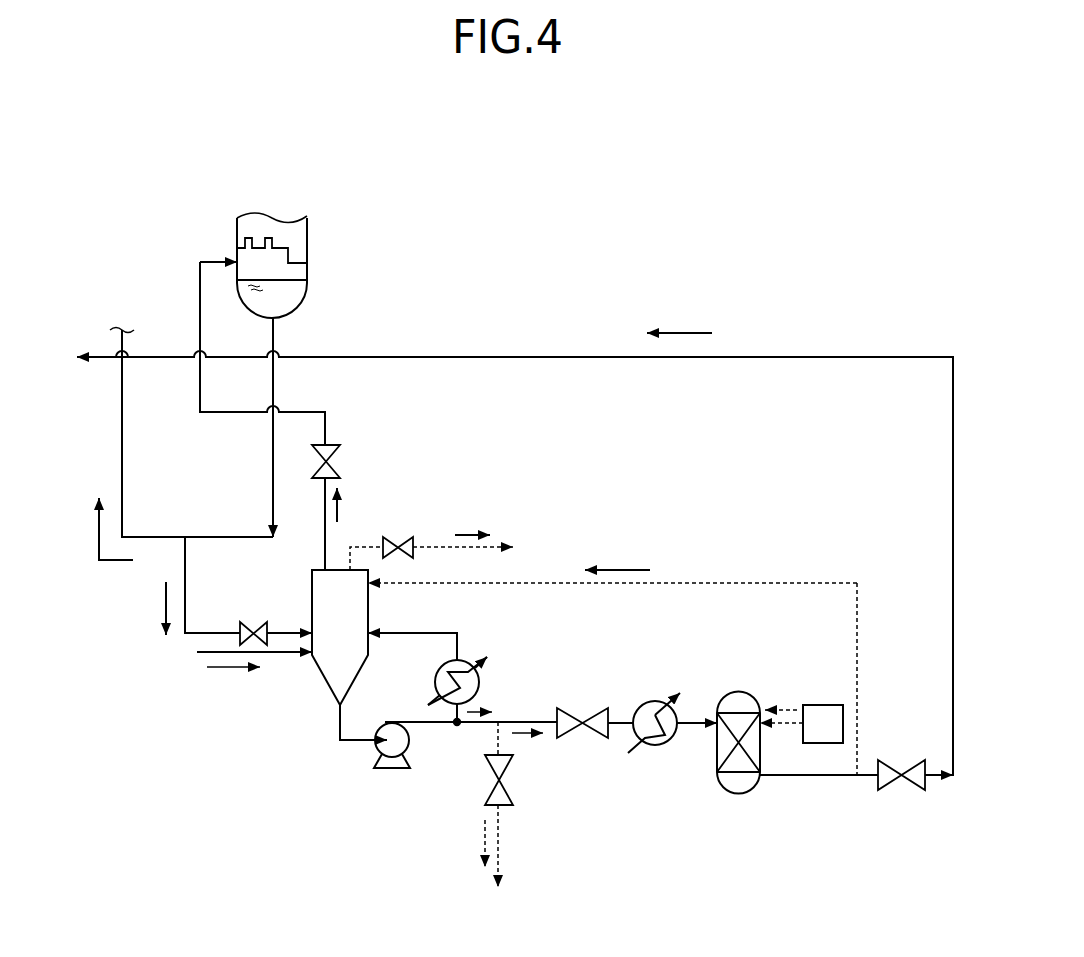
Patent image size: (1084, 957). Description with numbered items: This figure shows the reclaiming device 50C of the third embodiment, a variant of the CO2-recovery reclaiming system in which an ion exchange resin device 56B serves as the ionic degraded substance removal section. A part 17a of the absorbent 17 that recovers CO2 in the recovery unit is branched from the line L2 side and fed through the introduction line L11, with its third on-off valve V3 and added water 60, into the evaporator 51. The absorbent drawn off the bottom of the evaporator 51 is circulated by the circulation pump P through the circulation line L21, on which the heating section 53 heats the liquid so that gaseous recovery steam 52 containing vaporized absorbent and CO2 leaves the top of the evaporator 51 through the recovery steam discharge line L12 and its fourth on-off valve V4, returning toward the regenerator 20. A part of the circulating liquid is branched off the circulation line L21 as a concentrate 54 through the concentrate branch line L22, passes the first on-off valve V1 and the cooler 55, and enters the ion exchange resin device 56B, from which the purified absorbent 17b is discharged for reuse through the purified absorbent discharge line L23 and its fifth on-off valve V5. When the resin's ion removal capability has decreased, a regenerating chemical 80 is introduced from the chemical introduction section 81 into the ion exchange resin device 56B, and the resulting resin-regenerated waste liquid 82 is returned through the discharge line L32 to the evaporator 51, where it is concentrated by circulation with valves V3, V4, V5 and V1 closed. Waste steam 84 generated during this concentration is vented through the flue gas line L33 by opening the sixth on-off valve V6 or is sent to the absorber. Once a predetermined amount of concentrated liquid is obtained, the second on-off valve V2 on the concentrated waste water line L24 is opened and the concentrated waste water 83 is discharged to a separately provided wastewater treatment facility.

The reclaiming device 50C is at (753, 203).
The regenerator 20 is at (310, 245).
The absorbent 17 is at (123, 561).
The part of the absorbent 17a is at (158, 610).
The purified absorbent 17b is at (683, 333).
The gas line L2 is at (125, 418).
The introduction line L11 is at (186, 590).
The recovery steam discharge line L12 is at (322, 545).
The circulation line L21 is at (339, 728).
The concentrate branch line L22 is at (517, 720).
The purified absorbent discharge line L23 is at (810, 356).
The concentrated waste water line L24 is at (505, 865).
The discharge line L32 is at (718, 583).
The flue gas line L33 is at (445, 548).
The first on-off valve V1 is at (590, 706).
The second on-off valve V2 is at (485, 795).
The third on-off valve V3 is at (256, 630).
The fourth on-off valve V4 is at (341, 450).
The fifth on-off valve V5 is at (910, 758).
The sixth on-off valve V6 is at (392, 545).
The evaporator 51 is at (320, 675).
The recovery steam 52 is at (344, 508).
The heating section 53 is at (485, 680).
The concentrate 54 is at (528, 737).
The cooler 55 is at (650, 700).
The ion exchange resin device 56B is at (735, 790).
The water 60 is at (227, 668).
The regenerating chemical 80 is at (780, 708).
The chemical introduction section 81 is at (826, 705).
The resin-regenerated waste liquid 82 is at (633, 568).
The concentrated waste water 83 is at (480, 845).
The waste steam 84 is at (470, 535).
The circulation pump P is at (372, 768).